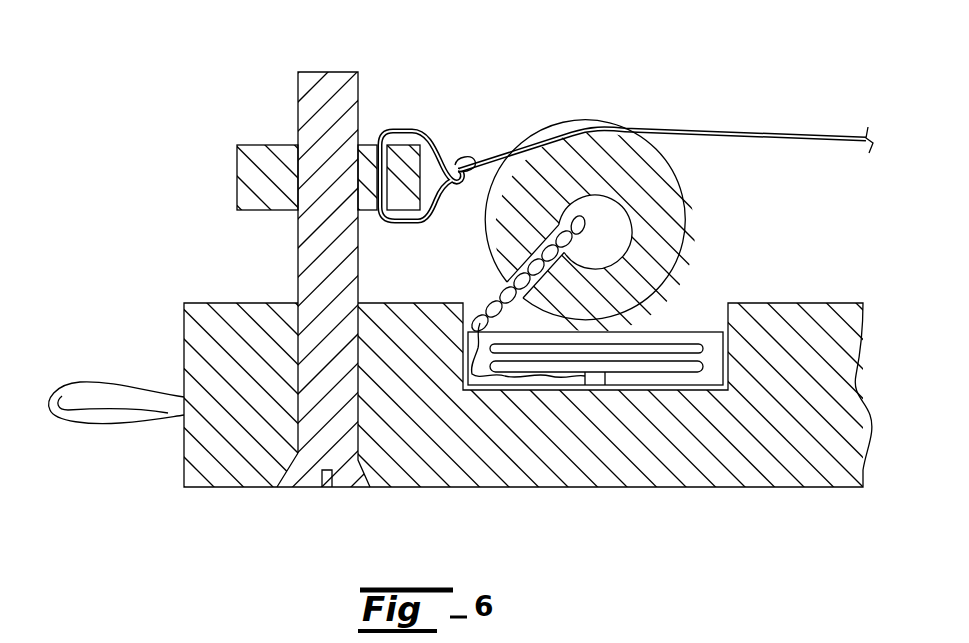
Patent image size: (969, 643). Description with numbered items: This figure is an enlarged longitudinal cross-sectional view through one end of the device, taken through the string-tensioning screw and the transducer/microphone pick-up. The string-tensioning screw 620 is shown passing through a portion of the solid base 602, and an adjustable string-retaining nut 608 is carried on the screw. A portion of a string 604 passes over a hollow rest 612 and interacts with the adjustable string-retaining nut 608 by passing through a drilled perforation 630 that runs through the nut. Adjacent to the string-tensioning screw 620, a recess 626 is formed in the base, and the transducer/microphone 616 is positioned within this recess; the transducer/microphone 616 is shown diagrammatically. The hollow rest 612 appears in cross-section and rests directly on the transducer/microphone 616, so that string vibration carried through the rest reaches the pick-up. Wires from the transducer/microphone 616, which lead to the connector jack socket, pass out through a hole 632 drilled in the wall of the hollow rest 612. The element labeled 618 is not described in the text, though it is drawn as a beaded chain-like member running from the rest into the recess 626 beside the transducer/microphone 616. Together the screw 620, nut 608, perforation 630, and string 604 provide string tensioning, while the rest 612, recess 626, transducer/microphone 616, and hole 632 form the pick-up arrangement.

The solid base 602 is at (612, 484).
The string 604 is at (768, 130).
The adjustable string-retaining nut 608 is at (237, 175).
The hollow rest 612 is at (689, 184).
The transducer/microphone 616 is at (652, 372).
The chain 618 is at (483, 300).
The string-tensioning screw 620 is at (328, 72).
The recess 626 is at (710, 325).
The drilled perforation 630 is at (385, 173).
The hole 632 is at (547, 257).